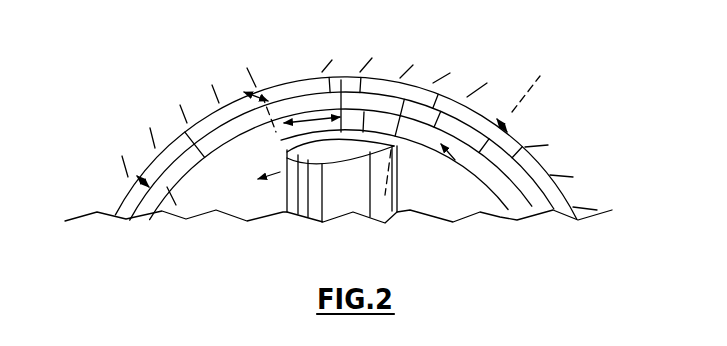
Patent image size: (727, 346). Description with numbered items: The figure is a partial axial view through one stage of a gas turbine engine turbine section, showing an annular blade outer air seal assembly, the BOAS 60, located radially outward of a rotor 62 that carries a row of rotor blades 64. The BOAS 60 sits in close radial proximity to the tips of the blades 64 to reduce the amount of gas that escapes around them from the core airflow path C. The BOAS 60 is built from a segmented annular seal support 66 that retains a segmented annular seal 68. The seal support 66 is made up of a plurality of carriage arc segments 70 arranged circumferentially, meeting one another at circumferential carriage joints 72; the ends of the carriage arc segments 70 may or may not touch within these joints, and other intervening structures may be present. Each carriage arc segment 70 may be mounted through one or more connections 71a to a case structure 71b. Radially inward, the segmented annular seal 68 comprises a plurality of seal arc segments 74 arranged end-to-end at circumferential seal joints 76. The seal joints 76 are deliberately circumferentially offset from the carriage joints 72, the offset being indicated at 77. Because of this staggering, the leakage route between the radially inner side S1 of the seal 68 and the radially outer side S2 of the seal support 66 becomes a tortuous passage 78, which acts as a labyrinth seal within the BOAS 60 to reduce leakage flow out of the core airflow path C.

The blade outer air seal system 60 is at (556, 196).
The rotor 62 is at (410, 209).
The rotor blades 64 is at (282, 214).
The segmented annular seal support 66 is at (406, 104).
The segmented annular seal 68 is at (455, 160).
The carriage arc segments 70 is at (208, 125).
The connections 71a is at (250, 95).
The case structure 71b is at (384, 76).
The circumferential carriage joints 72 is at (200, 149).
The seal arc segments 74 is at (200, 167).
The circumferential seal joints 76 is at (278, 172).
The circumferential offset 77 is at (271, 88).
The tortuous passages 78 is at (460, 104).
The radially inner side S1 is at (173, 195).
The radially outer side S2 is at (489, 117).
The core airflow path C is at (216, 214).